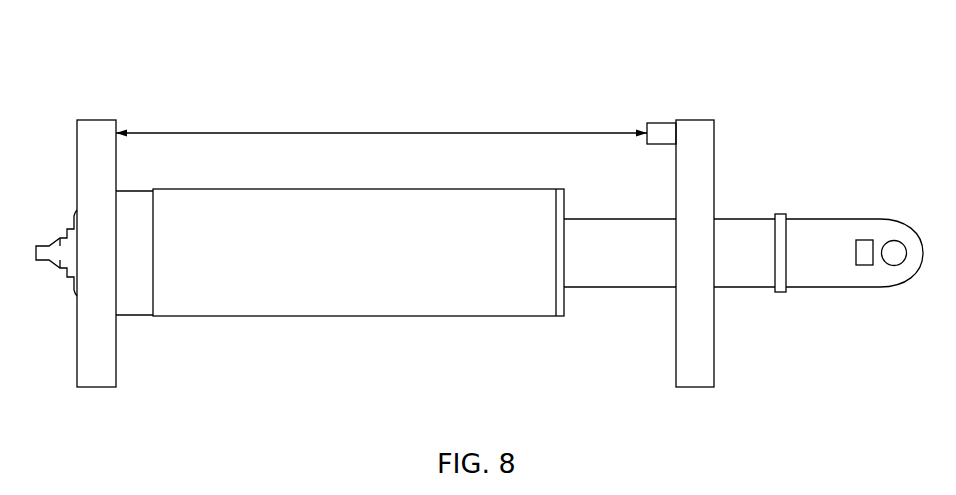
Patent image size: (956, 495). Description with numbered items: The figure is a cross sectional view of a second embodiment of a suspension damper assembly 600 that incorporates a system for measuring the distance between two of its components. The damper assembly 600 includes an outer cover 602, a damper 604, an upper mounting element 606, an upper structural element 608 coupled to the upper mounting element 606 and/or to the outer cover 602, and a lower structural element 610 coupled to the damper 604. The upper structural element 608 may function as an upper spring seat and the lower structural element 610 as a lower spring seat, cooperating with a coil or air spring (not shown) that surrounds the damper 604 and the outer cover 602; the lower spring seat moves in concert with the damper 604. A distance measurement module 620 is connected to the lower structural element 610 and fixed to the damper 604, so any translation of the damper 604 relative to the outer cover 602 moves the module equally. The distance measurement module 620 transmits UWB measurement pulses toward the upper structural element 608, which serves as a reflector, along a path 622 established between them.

The suspension damper assembly 600 is at (540, 59).
The outer cover 602 is at (458, 316).
The damper 604 is at (626, 219).
The upper mounting element 606 is at (74, 216).
The upper structural element 608 is at (96, 120).
The lower structural element 610 is at (694, 120).
The distance measurement module 620 is at (660, 123).
The path 622 is at (385, 133).